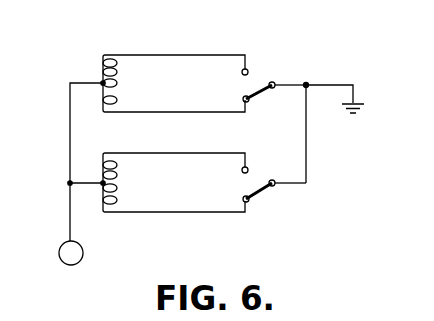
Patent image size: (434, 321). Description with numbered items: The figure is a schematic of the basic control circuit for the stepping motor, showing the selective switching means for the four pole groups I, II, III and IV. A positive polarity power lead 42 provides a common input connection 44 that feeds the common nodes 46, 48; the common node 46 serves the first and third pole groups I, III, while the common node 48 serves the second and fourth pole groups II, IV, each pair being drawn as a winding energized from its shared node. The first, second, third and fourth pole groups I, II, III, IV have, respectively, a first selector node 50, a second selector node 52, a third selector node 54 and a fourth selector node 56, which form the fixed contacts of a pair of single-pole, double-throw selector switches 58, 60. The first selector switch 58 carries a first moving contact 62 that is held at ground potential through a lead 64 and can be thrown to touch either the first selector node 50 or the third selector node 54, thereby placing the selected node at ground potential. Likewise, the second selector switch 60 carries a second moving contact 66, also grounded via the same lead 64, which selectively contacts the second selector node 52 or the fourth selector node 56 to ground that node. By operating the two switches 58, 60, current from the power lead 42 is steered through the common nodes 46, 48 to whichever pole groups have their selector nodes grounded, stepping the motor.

The positive polarity power lead 42 is at (74, 235).
The common input connection 44 is at (70, 183).
The common node 46 is at (103, 183).
The common node 48 is at (103, 83).
The first selector node 50 is at (248, 167).
The second selector node 52 is at (248, 69).
The third selector node 54 is at (249, 201).
The fourth selector node 56 is at (249, 101).
The first selector switch 58 is at (287, 176).
The second selector switch 60 is at (287, 72).
The first moving contact 62 is at (252, 192).
The lead 64 is at (306, 138).
The second moving contact 66 is at (252, 92).
The first pole group I is at (114, 152).
The second pole group II is at (109, 52).
The third pole group III is at (118, 200).
The fourth pole group IV is at (118, 99).